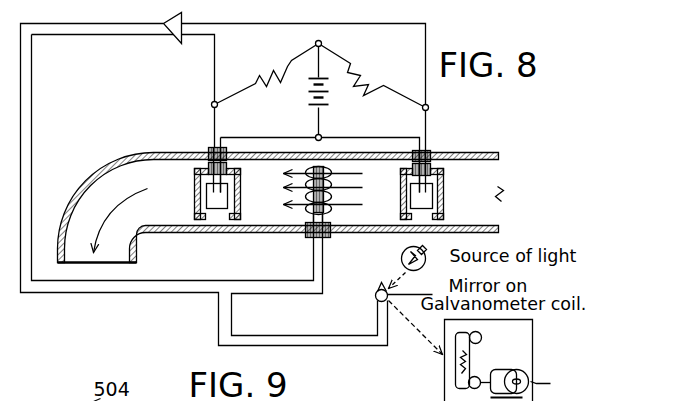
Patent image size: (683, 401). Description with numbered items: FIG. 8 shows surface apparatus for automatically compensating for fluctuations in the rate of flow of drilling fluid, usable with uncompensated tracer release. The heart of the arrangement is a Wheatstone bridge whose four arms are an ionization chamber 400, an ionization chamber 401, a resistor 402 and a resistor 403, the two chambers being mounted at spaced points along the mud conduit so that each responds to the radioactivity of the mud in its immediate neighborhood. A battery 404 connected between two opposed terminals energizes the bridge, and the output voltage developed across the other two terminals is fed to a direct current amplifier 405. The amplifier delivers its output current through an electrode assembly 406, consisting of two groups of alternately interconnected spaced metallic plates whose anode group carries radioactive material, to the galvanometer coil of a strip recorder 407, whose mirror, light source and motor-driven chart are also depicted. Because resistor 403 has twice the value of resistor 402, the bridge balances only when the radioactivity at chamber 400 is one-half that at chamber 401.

The ionization chamber 400 is at (441, 186).
The ionization chamber 401 is at (193, 181).
The resistor 402 is at (275, 65).
The resistor 403 is at (373, 58).
The battery 404 is at (313, 103).
The direct current amplifier 405 is at (176, 44).
The electrode assembly 406 is at (343, 205).
The strip recorder 407 is at (520, 352).